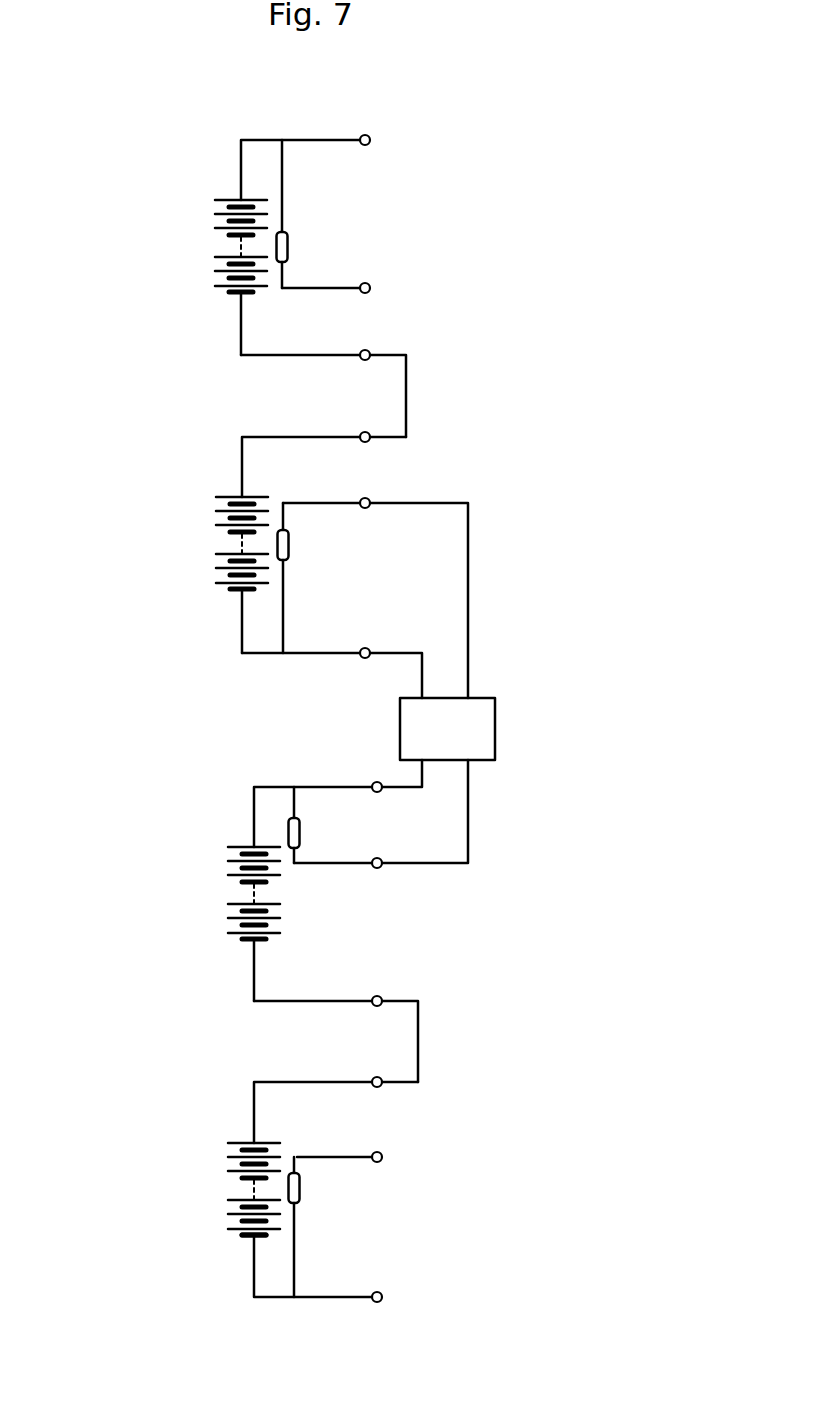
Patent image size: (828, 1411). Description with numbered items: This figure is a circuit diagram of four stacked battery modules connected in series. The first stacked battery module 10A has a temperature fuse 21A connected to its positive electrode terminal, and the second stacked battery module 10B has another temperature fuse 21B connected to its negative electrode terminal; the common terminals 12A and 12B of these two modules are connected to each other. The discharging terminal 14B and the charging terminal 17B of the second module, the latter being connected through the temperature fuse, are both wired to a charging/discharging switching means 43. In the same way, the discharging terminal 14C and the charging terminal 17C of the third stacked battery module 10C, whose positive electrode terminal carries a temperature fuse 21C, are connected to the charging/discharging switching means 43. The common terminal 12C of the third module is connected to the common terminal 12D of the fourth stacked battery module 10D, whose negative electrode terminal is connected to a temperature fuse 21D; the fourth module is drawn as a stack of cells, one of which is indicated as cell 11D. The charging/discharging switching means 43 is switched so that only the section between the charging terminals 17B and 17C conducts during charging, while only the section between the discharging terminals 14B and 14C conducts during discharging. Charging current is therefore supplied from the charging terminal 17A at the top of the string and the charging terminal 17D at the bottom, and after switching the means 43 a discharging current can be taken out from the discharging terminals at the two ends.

The first stacked battery module 10A is at (198, 243).
The second stacked battery module 10B is at (189, 543).
The third stacked battery module 10C is at (199, 896).
The fourth stacked battery module 10D is at (212, 1186).
The battery cell 11D is at (247, 1243).
The common terminal 12A is at (371, 349).
The common terminal 12B is at (371, 432).
The common terminal 12C is at (383, 993).
The common terminal 12D is at (385, 1090).
The discharging terminal 14B is at (371, 646).
The discharging terminal 14C is at (383, 790).
The charging terminal 17A is at (375, 282).
The charging terminal 17B is at (371, 497).
The charging terminal 17C is at (383, 873).
The charging terminal 17D is at (385, 1157).
The temperature fuse 21A is at (289, 247).
The temperature fuse 21B is at (290, 543).
The temperature fuse 21C is at (303, 833).
The temperature fuse 21D is at (300, 1192).
The charging/discharging switching means 43 is at (447, 729).